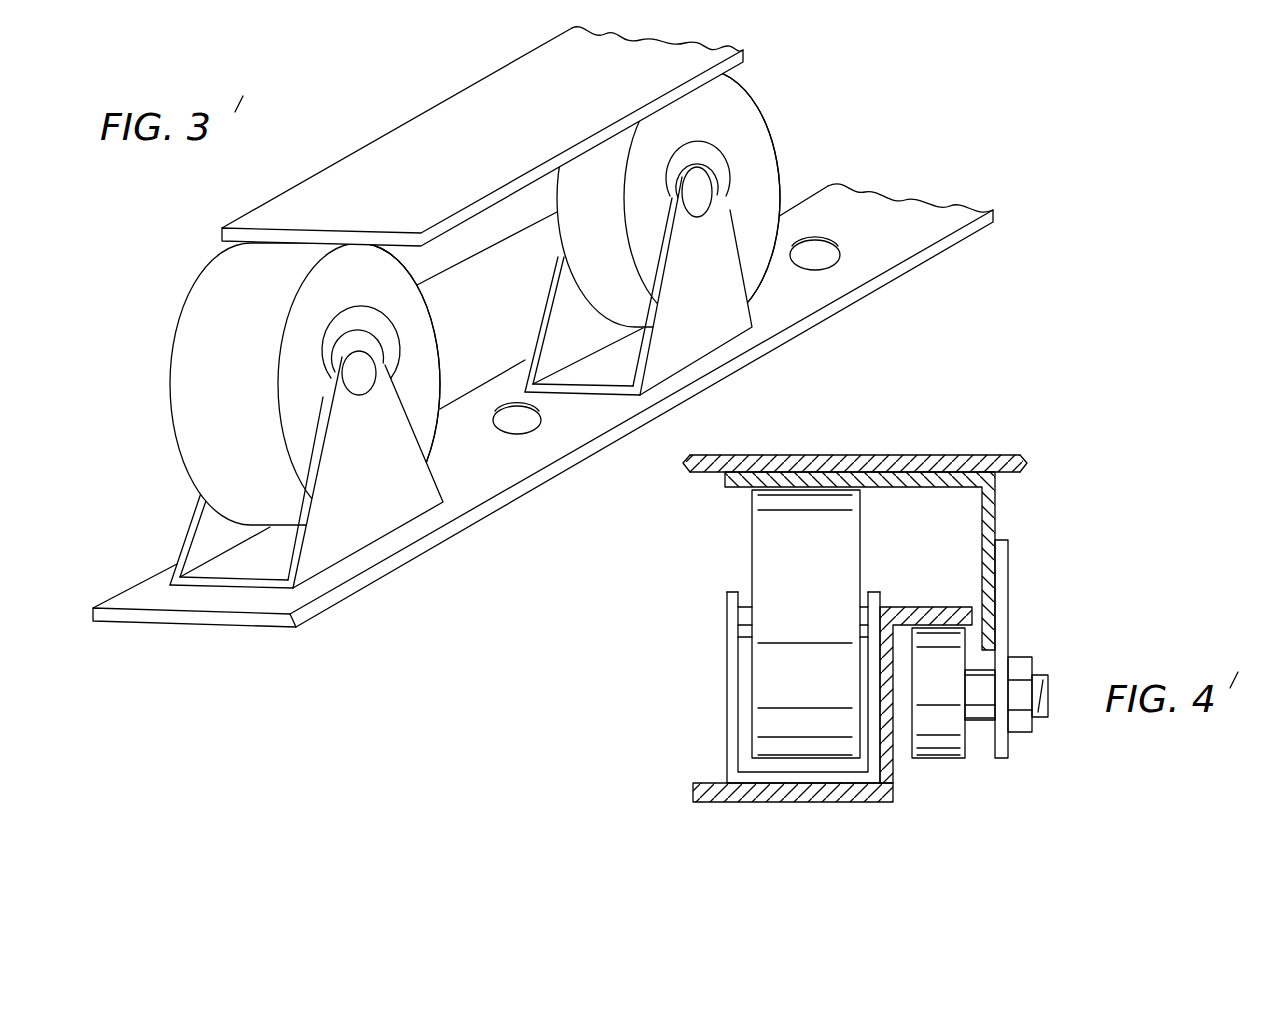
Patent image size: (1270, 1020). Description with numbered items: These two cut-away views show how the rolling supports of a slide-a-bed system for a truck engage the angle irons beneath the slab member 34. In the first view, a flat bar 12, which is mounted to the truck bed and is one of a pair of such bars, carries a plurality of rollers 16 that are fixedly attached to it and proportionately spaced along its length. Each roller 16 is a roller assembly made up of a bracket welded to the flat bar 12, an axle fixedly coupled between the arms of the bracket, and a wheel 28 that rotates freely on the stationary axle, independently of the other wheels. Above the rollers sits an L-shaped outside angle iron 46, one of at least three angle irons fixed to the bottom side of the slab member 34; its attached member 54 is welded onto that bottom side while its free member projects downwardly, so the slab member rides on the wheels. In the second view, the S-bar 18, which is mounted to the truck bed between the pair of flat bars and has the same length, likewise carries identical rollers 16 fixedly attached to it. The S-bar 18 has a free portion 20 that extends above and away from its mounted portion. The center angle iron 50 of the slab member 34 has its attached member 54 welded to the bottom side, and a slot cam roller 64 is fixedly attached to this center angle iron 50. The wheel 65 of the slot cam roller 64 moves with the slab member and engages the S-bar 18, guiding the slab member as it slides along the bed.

In FIG. 3, the flat bar 12 is at (192, 623).
In FIG. 4, the roller 16 is at (727, 653).
In FIG. 4, the S-bar 18 is at (745, 803).
In FIG. 4, the free portion 20 is at (943, 597).
In FIG. 3, the wheel 28 is at (210, 298).
In FIG. 4, the slab member 34 is at (828, 453).
In FIG. 3, the outside angle iron 46 is at (685, 43).
In FIG. 4, the center angle iron 50 is at (947, 456).
In FIG. 3, the attached member 54 is at (436, 163).
In FIG. 4, the slot cam roller 64 is at (1010, 598).
In FIG. 4, the wheel 65 is at (938, 753).